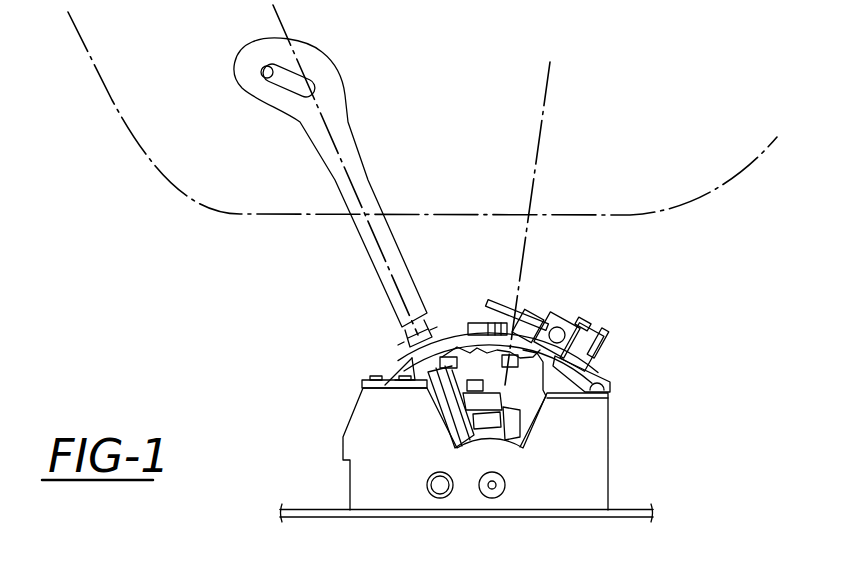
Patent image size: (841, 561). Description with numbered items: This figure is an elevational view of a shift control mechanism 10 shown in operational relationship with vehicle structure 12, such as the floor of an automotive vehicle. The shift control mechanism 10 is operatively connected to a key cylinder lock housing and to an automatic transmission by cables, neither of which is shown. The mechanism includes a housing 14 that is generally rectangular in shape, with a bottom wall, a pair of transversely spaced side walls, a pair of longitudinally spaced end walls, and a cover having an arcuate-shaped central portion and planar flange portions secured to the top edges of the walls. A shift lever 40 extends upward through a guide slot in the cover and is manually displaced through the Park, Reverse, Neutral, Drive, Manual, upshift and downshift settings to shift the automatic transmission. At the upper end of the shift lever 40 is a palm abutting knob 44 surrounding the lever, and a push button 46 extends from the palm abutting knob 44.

The shift control mechanism 10 is at (675, 333).
The vehicle structure 12 is at (630, 508).
The housing 14 is at (610, 438).
The shift lever 40 is at (405, 344).
The palm abutting knob 44 is at (308, 163).
The push button 46 is at (265, 72).